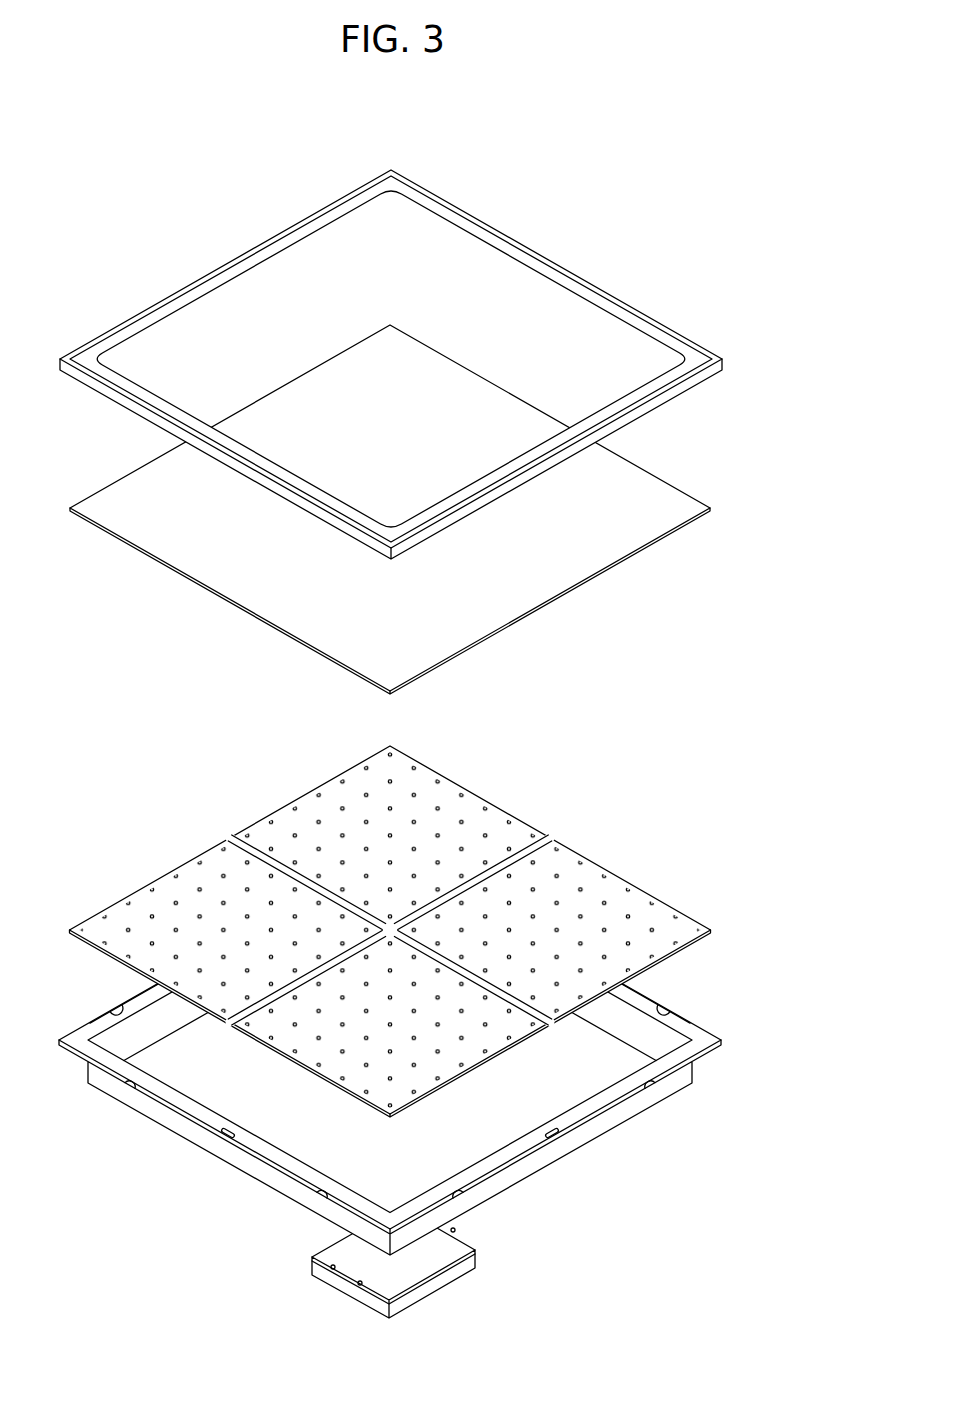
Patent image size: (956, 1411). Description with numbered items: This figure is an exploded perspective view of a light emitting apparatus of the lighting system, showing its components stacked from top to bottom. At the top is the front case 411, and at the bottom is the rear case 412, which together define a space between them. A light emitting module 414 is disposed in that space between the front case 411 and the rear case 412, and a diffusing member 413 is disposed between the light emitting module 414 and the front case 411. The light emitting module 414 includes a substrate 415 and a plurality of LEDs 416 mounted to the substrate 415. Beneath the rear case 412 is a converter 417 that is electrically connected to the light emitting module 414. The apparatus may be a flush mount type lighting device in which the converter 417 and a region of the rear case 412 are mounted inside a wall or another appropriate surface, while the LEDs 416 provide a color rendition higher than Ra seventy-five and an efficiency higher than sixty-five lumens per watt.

The front case 411 is at (724, 362).
The rear case 412 is at (702, 1035).
The diffusing member 413 is at (700, 511).
The light emitting module 414 is at (760, 894).
The substrate 415 is at (688, 930).
The LEDs 416 is at (627, 889).
The converter 417 is at (467, 1263).